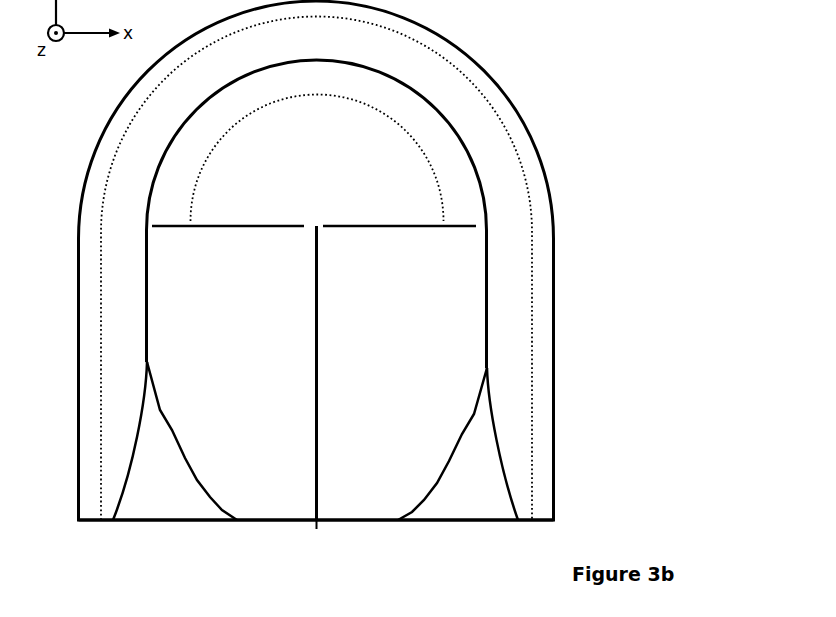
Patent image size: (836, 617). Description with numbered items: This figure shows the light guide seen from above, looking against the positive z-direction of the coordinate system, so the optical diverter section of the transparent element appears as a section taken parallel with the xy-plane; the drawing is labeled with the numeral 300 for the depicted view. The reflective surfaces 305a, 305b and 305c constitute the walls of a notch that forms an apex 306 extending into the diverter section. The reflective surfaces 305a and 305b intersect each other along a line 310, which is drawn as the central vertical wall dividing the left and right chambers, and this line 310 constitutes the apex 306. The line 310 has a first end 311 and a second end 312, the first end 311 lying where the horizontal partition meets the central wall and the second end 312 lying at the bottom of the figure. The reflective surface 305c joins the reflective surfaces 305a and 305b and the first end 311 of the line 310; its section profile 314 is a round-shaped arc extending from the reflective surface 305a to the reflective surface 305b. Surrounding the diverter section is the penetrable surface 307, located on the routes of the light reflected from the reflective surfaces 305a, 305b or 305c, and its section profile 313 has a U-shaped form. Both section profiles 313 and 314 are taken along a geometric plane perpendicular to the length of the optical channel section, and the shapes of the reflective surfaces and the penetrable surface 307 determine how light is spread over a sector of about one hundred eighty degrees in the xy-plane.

The shower head / device 300 is at (113, 1).
The reflective surface 305a is at (253, 364).
The reflective surface 305b is at (437, 334).
The reflective surface 305c is at (338, 164).
The apex 306 is at (317, 348).
The penetrable surface 307 is at (178, 116).
The line 310 is at (317, 428).
The first end 311 is at (317, 226).
The second end 312 is at (316, 528).
The section profile 313 is at (533, 272).
The section profile 314 is at (421, 144).